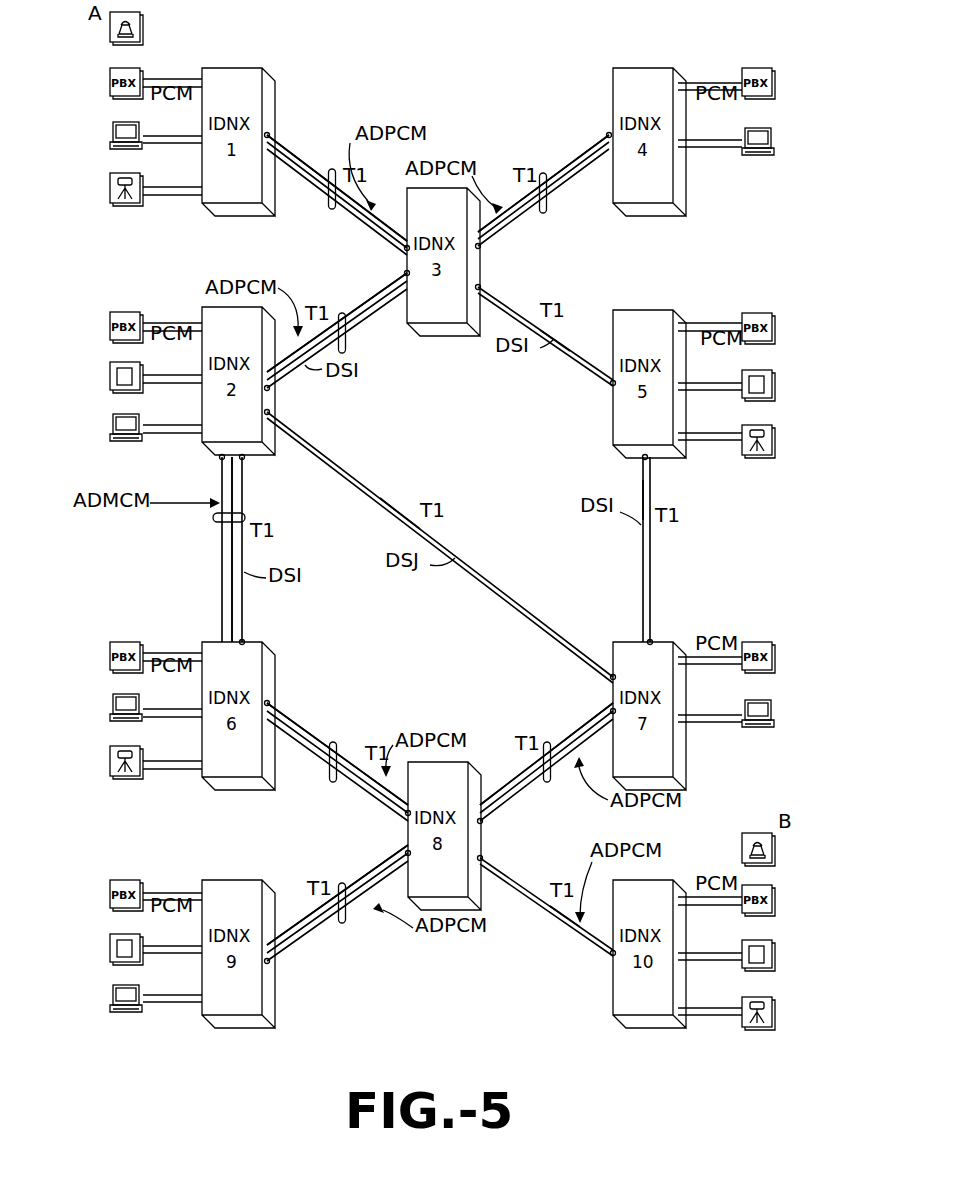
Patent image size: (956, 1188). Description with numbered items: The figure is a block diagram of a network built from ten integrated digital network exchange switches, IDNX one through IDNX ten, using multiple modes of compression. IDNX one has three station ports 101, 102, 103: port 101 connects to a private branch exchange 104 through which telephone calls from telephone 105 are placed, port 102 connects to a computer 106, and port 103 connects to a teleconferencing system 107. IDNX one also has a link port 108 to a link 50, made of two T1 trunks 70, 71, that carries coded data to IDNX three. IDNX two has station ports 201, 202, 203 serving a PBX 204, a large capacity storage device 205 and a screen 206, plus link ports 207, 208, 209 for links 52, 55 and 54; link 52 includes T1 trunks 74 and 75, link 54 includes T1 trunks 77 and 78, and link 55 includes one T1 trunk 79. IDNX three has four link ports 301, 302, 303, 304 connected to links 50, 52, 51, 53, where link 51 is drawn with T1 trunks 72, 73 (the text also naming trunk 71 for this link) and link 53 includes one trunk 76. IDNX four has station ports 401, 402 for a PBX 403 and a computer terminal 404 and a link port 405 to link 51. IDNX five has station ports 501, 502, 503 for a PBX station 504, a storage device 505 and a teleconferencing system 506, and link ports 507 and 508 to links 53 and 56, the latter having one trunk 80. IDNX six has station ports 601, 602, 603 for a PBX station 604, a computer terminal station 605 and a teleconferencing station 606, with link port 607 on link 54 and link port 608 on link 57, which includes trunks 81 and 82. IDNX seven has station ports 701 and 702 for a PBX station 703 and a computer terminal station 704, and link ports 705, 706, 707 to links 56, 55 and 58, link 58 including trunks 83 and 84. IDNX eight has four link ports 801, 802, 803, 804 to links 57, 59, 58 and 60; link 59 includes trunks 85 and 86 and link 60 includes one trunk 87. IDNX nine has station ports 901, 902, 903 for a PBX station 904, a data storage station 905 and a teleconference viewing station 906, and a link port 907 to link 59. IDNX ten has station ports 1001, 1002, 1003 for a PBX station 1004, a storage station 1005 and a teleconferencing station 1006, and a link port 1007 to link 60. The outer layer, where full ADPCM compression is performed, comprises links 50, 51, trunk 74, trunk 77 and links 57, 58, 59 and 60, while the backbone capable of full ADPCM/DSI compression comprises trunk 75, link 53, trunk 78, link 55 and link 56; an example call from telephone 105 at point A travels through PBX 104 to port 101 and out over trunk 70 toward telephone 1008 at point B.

The link 50 is at (332, 167).
The link 51 is at (543, 173).
The link 52 is at (343, 350).
The link 53 is at (563, 330).
The link 54 is at (246, 517).
The link 55 is at (397, 485).
The link 56 is at (658, 500).
The link 57 is at (332, 742).
The link 58 is at (547, 742).
The link 59 is at (345, 922).
The link 60 is at (558, 937).
The T1 trunk 70 is at (288, 145).
The T1 trunk 71 is at (363, 222).
The link 72 is at (503, 200).
The T1 trunk 73 is at (512, 228).
The T1 trunk 74 is at (345, 313).
The T1 trunk 75 is at (388, 332).
The T1 trunk 76 is at (572, 356).
The T1 trunk 77 is at (220, 560).
The T1 trunk 78 is at (244, 558).
The T1 trunk 79 is at (448, 550).
The T1 trunk 80 is at (652, 540).
The T1 trunk 81 is at (330, 760).
The T1 trunk 82 is at (350, 780).
The T1 trunk 83 is at (520, 772).
The T1 trunk 84 is at (525, 795).
The T1 trunk 85 is at (298, 912).
The T1 trunk 86 is at (348, 937).
The T1 trunk 87 is at (545, 903).
The port 101 is at (202, 79).
The port 102 is at (202, 136).
The port 103 is at (202, 187).
The private branch exchange (PBX) 104 is at (138, 76).
The telephone 105 is at (140, 20).
The computer 106 is at (136, 128).
The teleconferencing system 107 is at (136, 180).
The port 108 is at (272, 135).
The station port 201 is at (202, 323).
The station port 202 is at (202, 375).
The station port 203 is at (202, 425).
The PBX 204 is at (138, 312).
The large capacity storage device 205 is at (136, 362).
The screen 206 is at (136, 414).
The link port 207 is at (267, 388).
The link port 208 is at (267, 413).
The link port 209 is at (218, 457).
The link port 301 is at (405, 249).
The link port 302 is at (400, 270).
The link port 303 is at (480, 250).
The link port 304 is at (478, 288).
The station port 401 is at (678, 83).
The station port 402 is at (678, 141).
The PBX 403 is at (760, 75).
The computer terminal 404 is at (765, 128).
The link port 405 is at (605, 128).
The station port 501 is at (678, 323).
The station port 502 is at (678, 383).
The station port 503 is at (678, 433).
The PBX station 504 is at (760, 316).
The large capacity storage device 505 is at (762, 372).
The teleconferencing system 506 is at (760, 428).
The link port 507 is at (610, 385).
The link port 508 is at (641, 458).
The station port 601 is at (202, 653).
The station port 602 is at (202, 709).
The station port 603 is at (202, 761).
The PBX station 604 is at (133, 642).
The computer terminal station 605 is at (133, 694).
The teleconferencing station 606 is at (133, 746).
The link port 607 is at (243, 638).
The link port 608 is at (270, 703).
The station port 701 is at (678, 657).
The station port 702 is at (678, 715).
The PBX station 703 is at (758, 642).
The computer terminal station 704 is at (762, 700).
The link port 705 is at (650, 642).
The link port 706 is at (610, 670).
The link port 707 is at (611, 708).
The link port 801 is at (405, 820).
The link port 802 is at (407, 852).
The link port 803 is at (480, 820).
The link port 804 is at (480, 858).
The station port 901 is at (202, 893).
The station port 902 is at (202, 946).
The station port 903 is at (202, 995).
The PBX station 904 is at (135, 880).
The high capacity data storage station 905 is at (135, 934).
The teleconference viewing station 906 is at (135, 985).
The link port 907 is at (270, 962).
The station port 1001 is at (678, 897).
The station port 1002 is at (678, 953).
The station port 1003 is at (678, 1008).
The PBX station 1004 is at (758, 888).
The high capacity data storage station 1005 is at (758, 940).
The teleconferencing station 1006 is at (758, 997).
The link port 1007 is at (610, 958).
The telephone 1008 is at (745, 833).